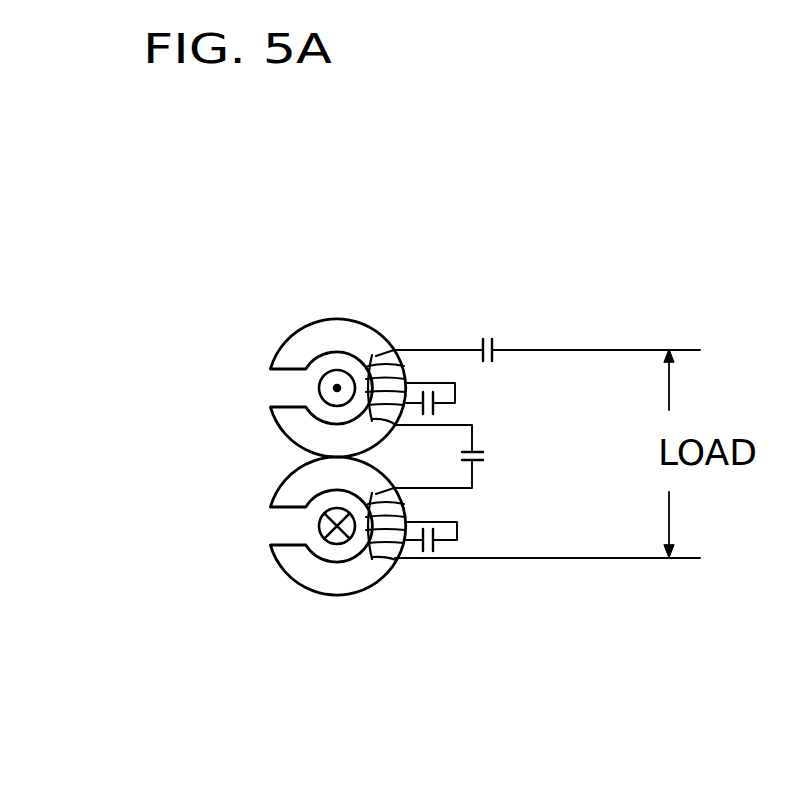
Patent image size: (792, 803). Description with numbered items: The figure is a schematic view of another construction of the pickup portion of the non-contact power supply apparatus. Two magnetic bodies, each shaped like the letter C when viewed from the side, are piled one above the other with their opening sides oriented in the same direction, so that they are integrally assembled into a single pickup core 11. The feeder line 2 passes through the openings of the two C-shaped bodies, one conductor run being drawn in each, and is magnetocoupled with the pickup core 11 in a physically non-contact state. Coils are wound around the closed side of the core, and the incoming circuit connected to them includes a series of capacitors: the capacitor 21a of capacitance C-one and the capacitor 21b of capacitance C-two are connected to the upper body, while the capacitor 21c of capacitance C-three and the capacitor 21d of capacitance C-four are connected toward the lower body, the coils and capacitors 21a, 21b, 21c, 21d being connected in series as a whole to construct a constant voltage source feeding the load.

The pickup core 11 is at (328, 316).
The feeder line 2 is at (319, 526).
The capacitor 21a is at (490, 338).
The capacitor 21b is at (428, 417).
The capacitor 21c is at (485, 455).
The capacitor 21d is at (430, 552).